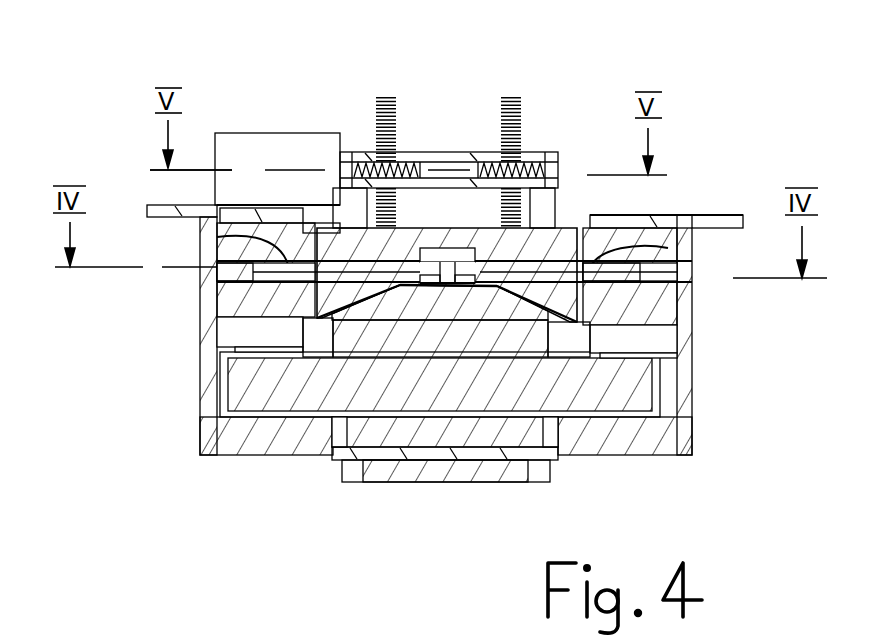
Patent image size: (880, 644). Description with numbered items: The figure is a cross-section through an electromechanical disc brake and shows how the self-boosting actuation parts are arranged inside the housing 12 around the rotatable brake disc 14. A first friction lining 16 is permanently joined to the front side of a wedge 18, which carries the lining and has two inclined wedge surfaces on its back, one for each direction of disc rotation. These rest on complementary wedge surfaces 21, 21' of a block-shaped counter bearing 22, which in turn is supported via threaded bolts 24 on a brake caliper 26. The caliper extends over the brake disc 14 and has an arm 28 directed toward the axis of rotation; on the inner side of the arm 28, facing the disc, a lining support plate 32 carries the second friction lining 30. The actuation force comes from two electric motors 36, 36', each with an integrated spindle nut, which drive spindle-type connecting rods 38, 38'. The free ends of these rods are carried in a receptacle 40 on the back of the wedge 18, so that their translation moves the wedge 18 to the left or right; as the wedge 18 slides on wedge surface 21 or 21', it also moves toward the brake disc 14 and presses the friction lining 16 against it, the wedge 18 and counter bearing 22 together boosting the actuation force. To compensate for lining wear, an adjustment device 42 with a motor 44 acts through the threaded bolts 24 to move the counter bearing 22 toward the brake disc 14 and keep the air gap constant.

The housing 12 is at (680, 377).
The brake disc 14 is at (267, 383).
The first friction lining 16 is at (417, 337).
The wedge 18 is at (400, 303).
The complementary wedge surface 21 is at (346, 409).
The complementary wedge surface 21' is at (583, 400).
The counter bearing 22 is at (560, 248).
The threaded bolts 24 is at (386, 97).
The brake caliper 26 is at (444, 155).
The arm 28 is at (518, 470).
The second friction lining 30 is at (437, 430).
The lining support plate 32 is at (505, 452).
The electric motor 36 is at (219, 305).
The electric motor 36' is at (676, 286).
The connecting rod 38 is at (278, 254).
The connecting rod 38' is at (599, 257).
The receptacle 40 is at (460, 240).
The adjustment device 42 is at (535, 112).
The motor 44 is at (238, 147).